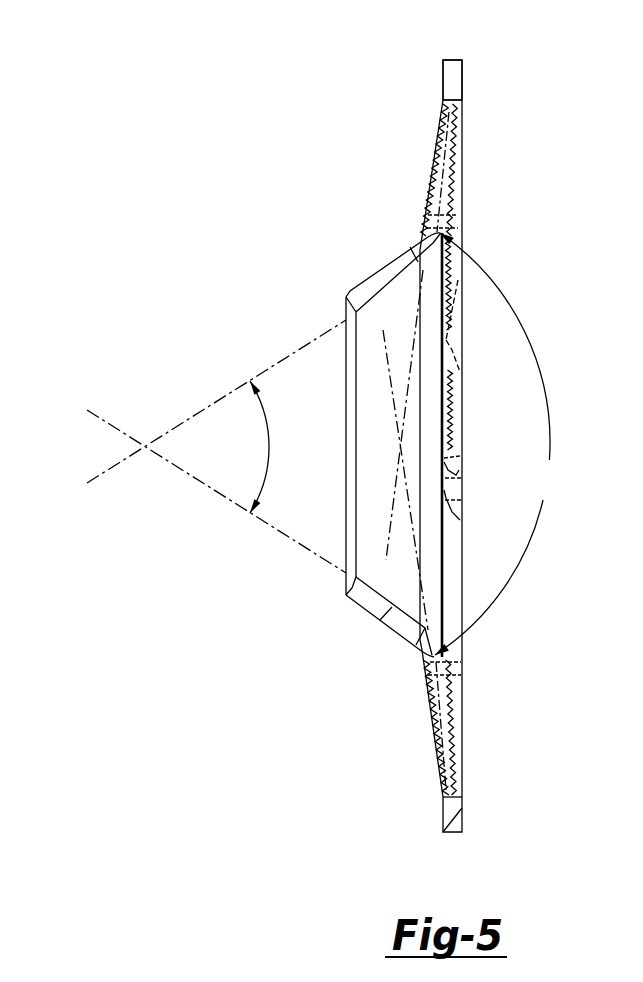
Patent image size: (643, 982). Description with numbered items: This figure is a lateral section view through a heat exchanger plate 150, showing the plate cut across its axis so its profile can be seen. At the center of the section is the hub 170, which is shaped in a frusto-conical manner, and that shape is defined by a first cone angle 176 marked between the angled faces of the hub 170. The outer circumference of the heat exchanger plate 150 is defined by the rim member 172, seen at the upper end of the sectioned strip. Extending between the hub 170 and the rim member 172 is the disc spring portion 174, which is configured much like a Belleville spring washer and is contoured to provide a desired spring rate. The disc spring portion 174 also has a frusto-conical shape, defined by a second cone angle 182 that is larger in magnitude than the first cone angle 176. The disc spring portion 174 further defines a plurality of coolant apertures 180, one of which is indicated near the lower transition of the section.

The heat exchanger plate 150 is at (366, 746).
The hub 170 is at (383, 615).
The rim member 172 is at (453, 80).
The disc spring portion 174 is at (430, 173).
The first cone angle 176 is at (216, 446).
The coolant aperture 180 is at (450, 657).
The second cone angle 182 is at (499, 444).